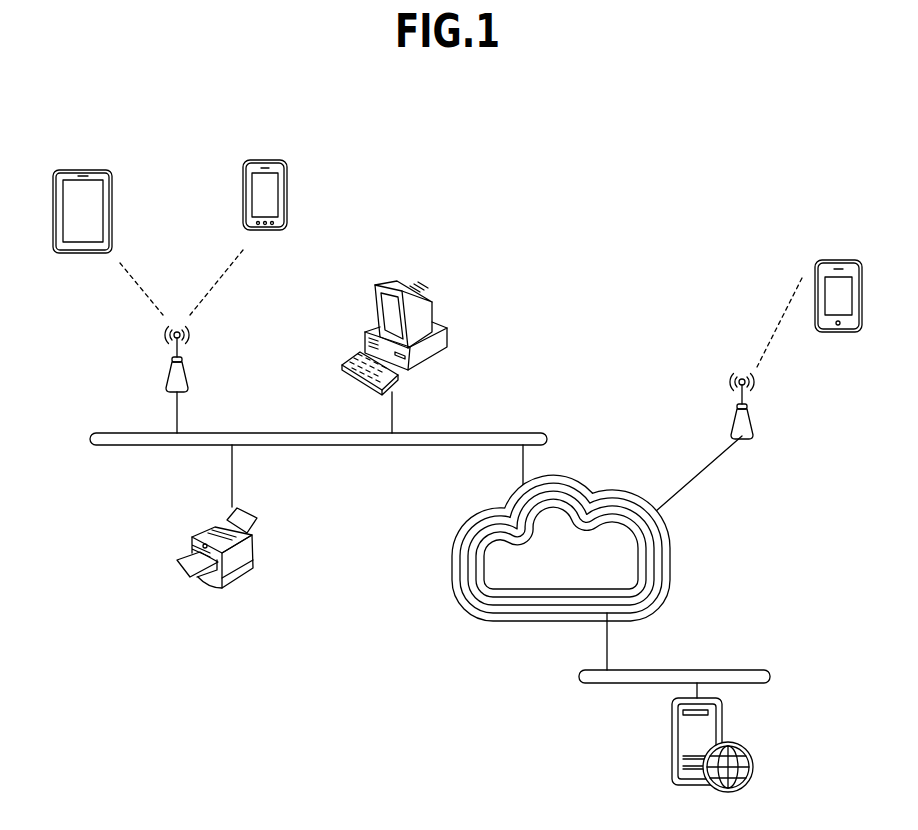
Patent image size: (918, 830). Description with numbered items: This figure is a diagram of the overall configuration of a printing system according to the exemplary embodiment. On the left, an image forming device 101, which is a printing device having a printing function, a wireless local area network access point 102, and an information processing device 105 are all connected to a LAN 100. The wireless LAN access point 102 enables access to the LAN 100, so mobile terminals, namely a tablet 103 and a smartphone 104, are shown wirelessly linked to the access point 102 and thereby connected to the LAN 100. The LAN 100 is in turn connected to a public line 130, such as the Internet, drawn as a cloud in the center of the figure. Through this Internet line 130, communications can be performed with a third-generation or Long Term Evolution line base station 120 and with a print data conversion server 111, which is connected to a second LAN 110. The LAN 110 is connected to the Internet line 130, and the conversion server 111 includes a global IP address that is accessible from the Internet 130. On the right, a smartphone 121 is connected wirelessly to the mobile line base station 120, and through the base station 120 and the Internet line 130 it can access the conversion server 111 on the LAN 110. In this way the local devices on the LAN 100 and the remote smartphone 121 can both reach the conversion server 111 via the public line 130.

The LAN 100 is at (480, 433).
The image forming device 101 is at (256, 552).
The wireless LAN access point 102 is at (189, 373).
The tablet 103 is at (84, 171).
The smartphone 104 is at (265, 160).
The information processing device 105 is at (418, 293).
The LAN 110 is at (722, 670).
The print data conversion server 111 is at (672, 730).
The 3G/LTE line base station 120 is at (753, 413).
The smartphone 121 is at (838, 260).
The public line 130 is at (664, 572).